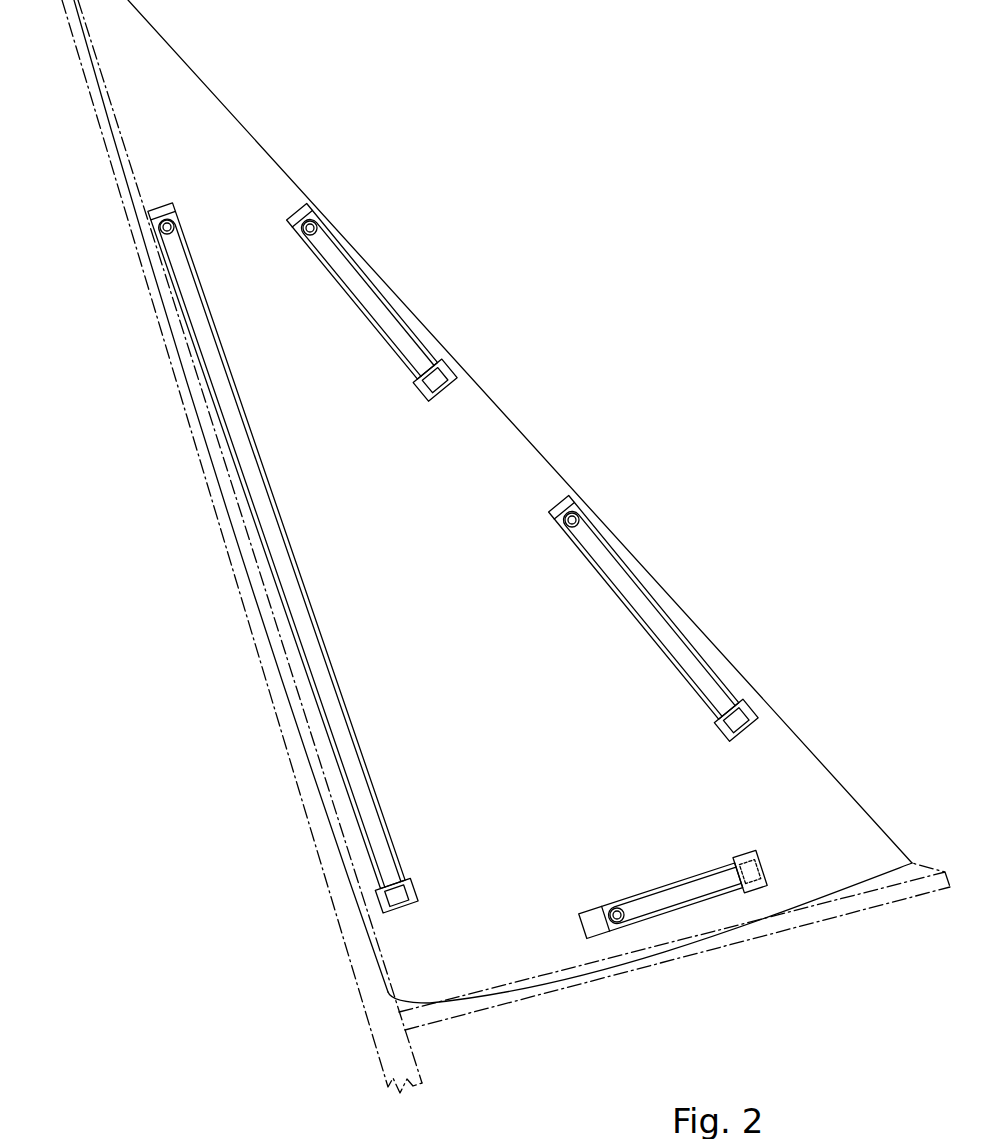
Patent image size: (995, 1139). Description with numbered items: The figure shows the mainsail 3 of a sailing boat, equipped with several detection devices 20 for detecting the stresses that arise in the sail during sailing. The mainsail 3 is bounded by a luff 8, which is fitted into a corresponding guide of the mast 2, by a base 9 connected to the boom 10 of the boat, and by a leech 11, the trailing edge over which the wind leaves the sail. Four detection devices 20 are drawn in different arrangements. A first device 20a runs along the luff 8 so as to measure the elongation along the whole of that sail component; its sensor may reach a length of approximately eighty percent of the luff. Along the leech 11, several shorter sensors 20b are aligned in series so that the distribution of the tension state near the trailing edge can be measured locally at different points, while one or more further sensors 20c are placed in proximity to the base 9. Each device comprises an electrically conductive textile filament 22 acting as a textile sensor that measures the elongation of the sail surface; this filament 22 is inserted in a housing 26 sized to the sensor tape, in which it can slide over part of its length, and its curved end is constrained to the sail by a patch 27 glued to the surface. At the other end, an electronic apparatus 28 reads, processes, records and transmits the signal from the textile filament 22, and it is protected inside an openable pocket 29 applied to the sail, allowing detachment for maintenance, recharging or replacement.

The mast 2 is at (213, 472).
The mainsail 3 is at (493, 501).
The luff 8 is at (313, 780).
The base 9 is at (808, 883).
The boom 10 is at (693, 952).
The leech 11 is at (789, 727).
The detection device 20 is at (478, 605).
The detection device along the luff 20a is at (277, 708).
The detection devices along the leech 20b is at (408, 323).
The detection device near the base 20c is at (652, 927).
The electrically conductive textile filament 22 is at (386, 351).
The housing 26 is at (440, 621).
The patch 27 is at (173, 224).
The electronic apparatus 28 is at (424, 387).
The pocket 29 is at (456, 380).